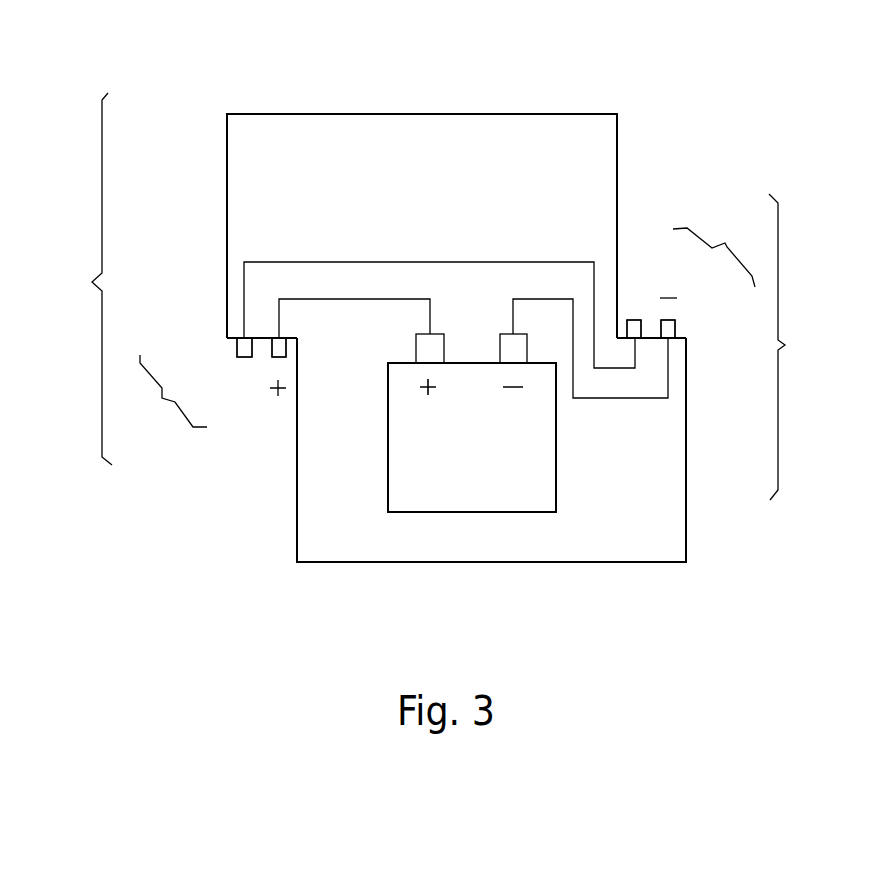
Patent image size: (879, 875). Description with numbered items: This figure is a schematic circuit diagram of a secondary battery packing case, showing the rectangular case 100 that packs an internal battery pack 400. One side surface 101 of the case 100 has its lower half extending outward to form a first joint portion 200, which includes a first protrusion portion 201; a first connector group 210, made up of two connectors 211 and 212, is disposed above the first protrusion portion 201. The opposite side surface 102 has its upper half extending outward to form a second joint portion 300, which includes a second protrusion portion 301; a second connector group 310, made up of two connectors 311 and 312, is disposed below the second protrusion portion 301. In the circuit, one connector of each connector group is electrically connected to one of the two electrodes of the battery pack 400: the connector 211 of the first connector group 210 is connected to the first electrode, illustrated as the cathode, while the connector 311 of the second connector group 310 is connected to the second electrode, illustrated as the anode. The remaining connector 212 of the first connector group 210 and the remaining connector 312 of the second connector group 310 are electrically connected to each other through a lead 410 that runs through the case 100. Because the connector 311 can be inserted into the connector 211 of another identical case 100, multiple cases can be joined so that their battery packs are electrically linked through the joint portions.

The case 100 is at (454, 283).
The side surface 101 is at (617, 158).
The side surface 102 is at (297, 483).
The first joint portion 200 is at (802, 347).
The first protrusion portion 201 is at (670, 465).
The first connector group 210 is at (691, 273).
The connector 211 is at (668, 332).
The connector 212 is at (633, 320).
The second joint portion 300 is at (76, 279).
The second protrusion portion 301 is at (238, 168).
The second connector group 310 is at (201, 385).
The connector 311 is at (273, 357).
The connector 312 is at (237, 345).
The battery pack 400 is at (460, 498).
The lead 410 is at (406, 261).